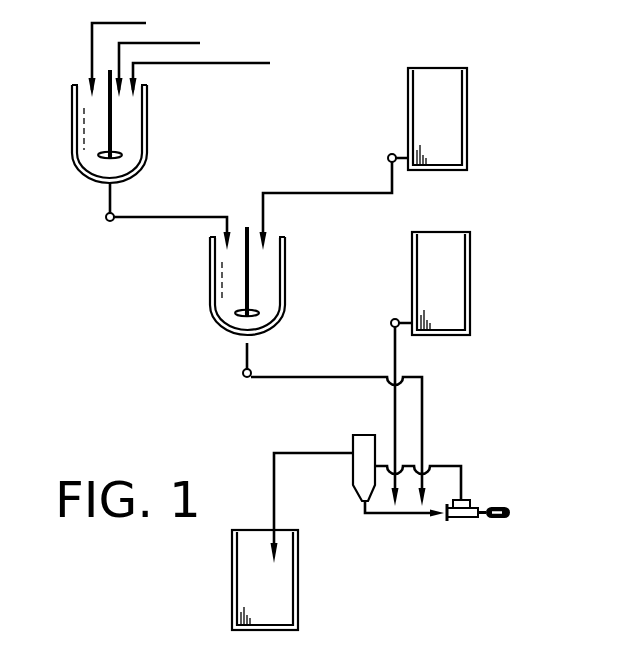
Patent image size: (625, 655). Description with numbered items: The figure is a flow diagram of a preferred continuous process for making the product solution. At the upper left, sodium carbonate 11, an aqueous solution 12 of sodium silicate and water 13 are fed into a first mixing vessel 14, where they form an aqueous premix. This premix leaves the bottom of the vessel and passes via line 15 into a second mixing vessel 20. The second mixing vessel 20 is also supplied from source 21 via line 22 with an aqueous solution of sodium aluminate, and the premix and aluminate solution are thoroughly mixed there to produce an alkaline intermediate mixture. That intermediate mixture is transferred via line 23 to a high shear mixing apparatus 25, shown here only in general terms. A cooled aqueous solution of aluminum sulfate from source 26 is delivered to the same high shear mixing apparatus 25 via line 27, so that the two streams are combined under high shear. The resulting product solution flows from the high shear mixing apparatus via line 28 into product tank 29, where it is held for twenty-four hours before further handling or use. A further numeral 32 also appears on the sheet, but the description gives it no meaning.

The sodium carbonate 11 is at (252, 58).
The aqueous solution of sodium silicate 12 is at (187, 38).
The water 13 is at (124, 15).
The mixing vessel 14 is at (147, 133).
The line 15 is at (162, 224).
The mixing vessel 20 is at (285, 277).
The source 21 is at (467, 137).
The line 22 is at (284, 191).
The line 23 is at (340, 377).
The high shear mixing apparatus 25 is at (482, 464).
The source 26 is at (470, 290).
The line 27 is at (393, 407).
The line 28 is at (273, 472).
The product tank 29 is at (298, 575).
The sheet reference numeral 32 is at (75, 636).